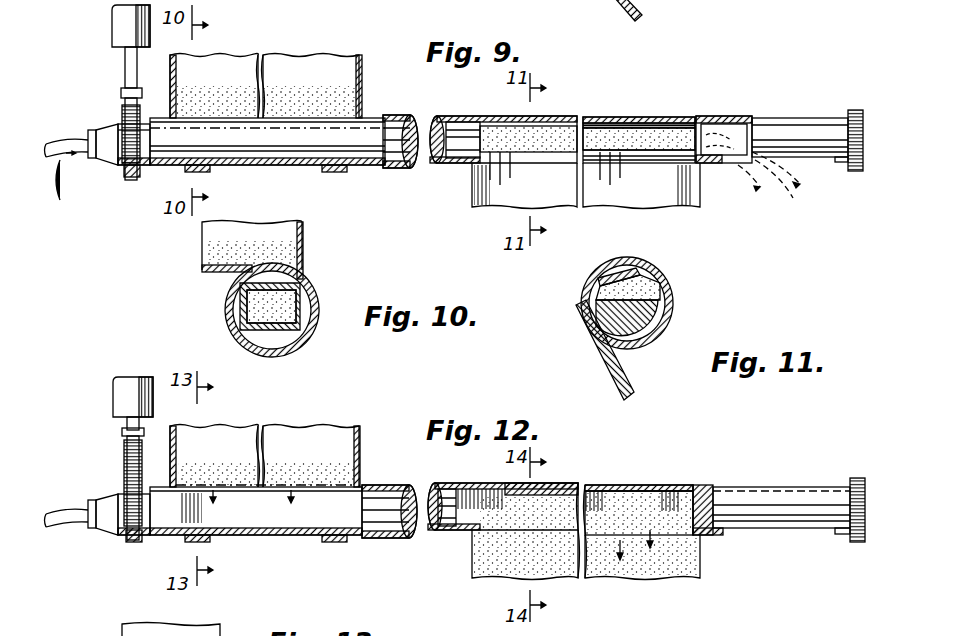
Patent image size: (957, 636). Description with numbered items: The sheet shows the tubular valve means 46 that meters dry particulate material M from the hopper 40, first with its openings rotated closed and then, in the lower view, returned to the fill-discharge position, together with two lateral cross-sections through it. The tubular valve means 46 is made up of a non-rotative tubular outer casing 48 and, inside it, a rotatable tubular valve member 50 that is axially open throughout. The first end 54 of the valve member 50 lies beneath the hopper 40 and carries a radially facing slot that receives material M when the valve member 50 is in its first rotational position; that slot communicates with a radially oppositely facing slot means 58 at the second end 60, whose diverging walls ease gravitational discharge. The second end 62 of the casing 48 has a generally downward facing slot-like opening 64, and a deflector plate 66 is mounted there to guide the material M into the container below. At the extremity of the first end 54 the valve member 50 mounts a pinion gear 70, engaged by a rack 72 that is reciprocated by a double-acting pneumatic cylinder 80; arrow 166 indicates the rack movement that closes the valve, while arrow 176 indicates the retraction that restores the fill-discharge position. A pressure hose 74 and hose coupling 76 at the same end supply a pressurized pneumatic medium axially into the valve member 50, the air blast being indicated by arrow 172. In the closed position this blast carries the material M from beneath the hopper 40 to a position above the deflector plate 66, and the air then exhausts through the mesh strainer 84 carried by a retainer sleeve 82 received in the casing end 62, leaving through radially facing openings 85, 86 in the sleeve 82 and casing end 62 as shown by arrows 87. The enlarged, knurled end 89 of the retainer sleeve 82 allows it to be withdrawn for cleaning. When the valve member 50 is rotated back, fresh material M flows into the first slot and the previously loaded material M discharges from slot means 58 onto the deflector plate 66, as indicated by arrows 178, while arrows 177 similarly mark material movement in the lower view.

In FIG. 9, the hopper 40 is at (362, 76).
In FIG. 10, the hopper 40 is at (206, 276).
In FIG. 12, the hopper 40 is at (362, 434).
In FIG. 9, the tubular valve means 46 is at (423, 172).
In FIG. 12, the tubular valve means 46 is at (423, 545).
In FIG. 9, the tubular outer casing 48 is at (387, 117).
In FIG. 10, the tubular outer casing 48 is at (228, 312).
In FIG. 11, the tubular outer casing 48 is at (600, 263).
In FIG. 12, the tubular outer casing 48 is at (378, 487).
In FIG. 9, the rotatable tubular valve member 50 is at (356, 166).
In FIG. 12, the rotatable tubular valve member 50 is at (308, 538).
In FIG. 9, the first end 54 is at (164, 166).
In FIG. 10, the first end 54 is at (280, 340).
In FIG. 12, the first end 54 is at (159, 540).
In FIG. 9, the slot means 58 is at (620, 127).
In FIG. 11, the slot means 58 is at (660, 322).
In FIG. 9, the second end 60 is at (670, 124).
In FIG. 12, the second end 60 is at (674, 487).
In FIG. 9, the second end 62 is at (644, 125).
In FIG. 12, the second end 62 is at (632, 487).
In FIG. 9, the slot-like opening 64 is at (490, 165).
In FIG. 11, the slot-like opening 64 is at (650, 342).
In FIG. 12, the slot-like opening 64 is at (488, 541).
In FIG. 9, the deflector plate 66 is at (650, 204).
In FIG. 11, the deflector plate 66 is at (605, 373).
In FIG. 12, the deflector plate 66 is at (700, 572).
In FIG. 9, the pinion gear 70 is at (124, 171).
In FIG. 12, the pinion gear 70 is at (125, 540).
In FIG. 9, the rack 72 is at (131, 182).
In FIG. 12, the rack 72 is at (138, 470).
In FIG. 9, the pressure hose 74 is at (62, 139).
In FIG. 12, the pressure hose 74 is at (62, 512).
In FIG. 9, the hose coupling 76 is at (105, 130).
In FIG. 12, the hose coupling 76 is at (105, 500).
In FIG. 9, the double-acting pneumatic cylinder 80 is at (116, 22).
In FIG. 12, the double-acting pneumatic cylinder 80 is at (116, 392).
In FIG. 9, the retainer sleeve 82 is at (742, 118).
In FIG. 12, the retainer sleeve 82 is at (781, 510).
In FIG. 9, the mesh strainer 84 is at (708, 119).
In FIG. 11, the mesh strainer 84 is at (619, 277).
In FIG. 12, the mesh strainer 84 is at (710, 487).
In FIG. 9, the radially facing opening 85 is at (730, 165).
In FIG. 12, the radially facing opening 85 is at (725, 535).
In FIG. 9, the radially facing opening 86 is at (757, 188).
In FIG. 9, the arrows 87 is at (785, 182).
In FIG. 9, the knurled end 89 is at (855, 110).
In FIG. 12, the knurled end 89 is at (857, 478).
In FIG. 9, the arrow 166 is at (110, 86).
In FIG. 9, the arrow 172 is at (59, 187).
In FIG. 12, the arrow 176 is at (109, 438).
In FIG. 12, the material flow 177 is at (215, 478).
In FIG. 12, the arrows 178 is at (513, 541).
In FIG. 9, the dry particulate material M is at (554, 127).
In FIG. 10, the dry particulate material M is at (271, 306).
In FIG. 11, the dry particulate material M is at (628, 287).
In FIG. 12, the dry particulate material M is at (358, 537).